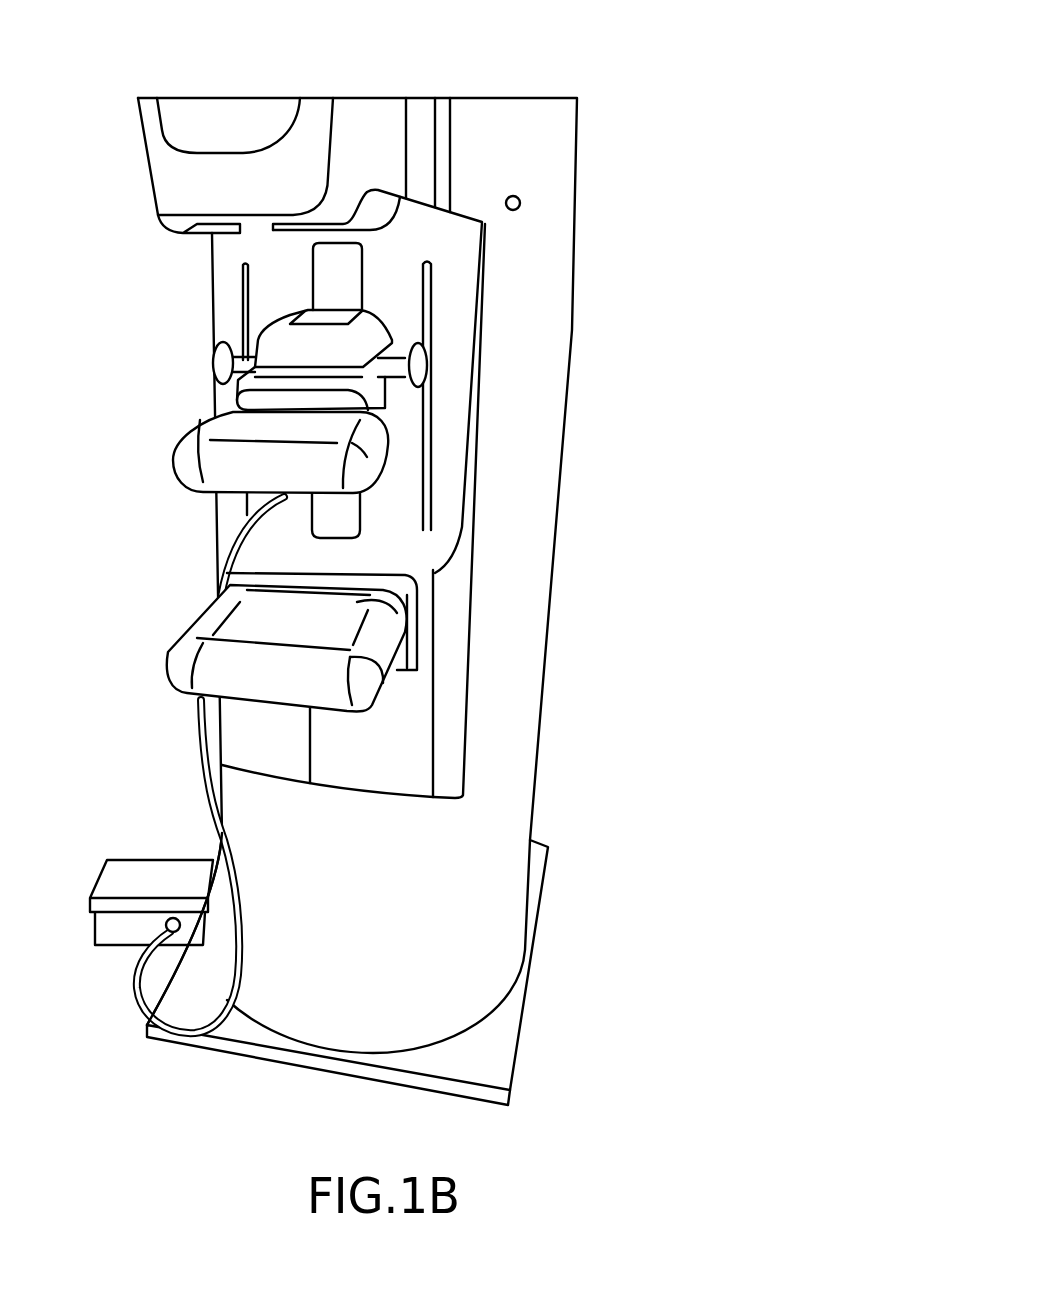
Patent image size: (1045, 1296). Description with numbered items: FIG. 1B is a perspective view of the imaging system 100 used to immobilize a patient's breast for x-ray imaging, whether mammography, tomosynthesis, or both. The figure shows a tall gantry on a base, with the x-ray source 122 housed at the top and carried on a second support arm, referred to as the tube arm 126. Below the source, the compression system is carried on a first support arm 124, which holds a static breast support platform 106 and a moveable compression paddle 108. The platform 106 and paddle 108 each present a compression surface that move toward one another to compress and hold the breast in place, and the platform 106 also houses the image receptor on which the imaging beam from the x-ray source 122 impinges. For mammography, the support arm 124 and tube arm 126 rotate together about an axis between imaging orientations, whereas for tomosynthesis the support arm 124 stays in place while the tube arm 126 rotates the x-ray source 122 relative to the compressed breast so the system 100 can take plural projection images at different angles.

The imaging system 100 is at (435, 556).
The breast support platform 106 is at (395, 682).
The compression paddle 108 is at (367, 458).
The x-ray source 122 is at (378, 160).
The first support arm 124 is at (448, 387).
The tube arm 126 is at (523, 320).